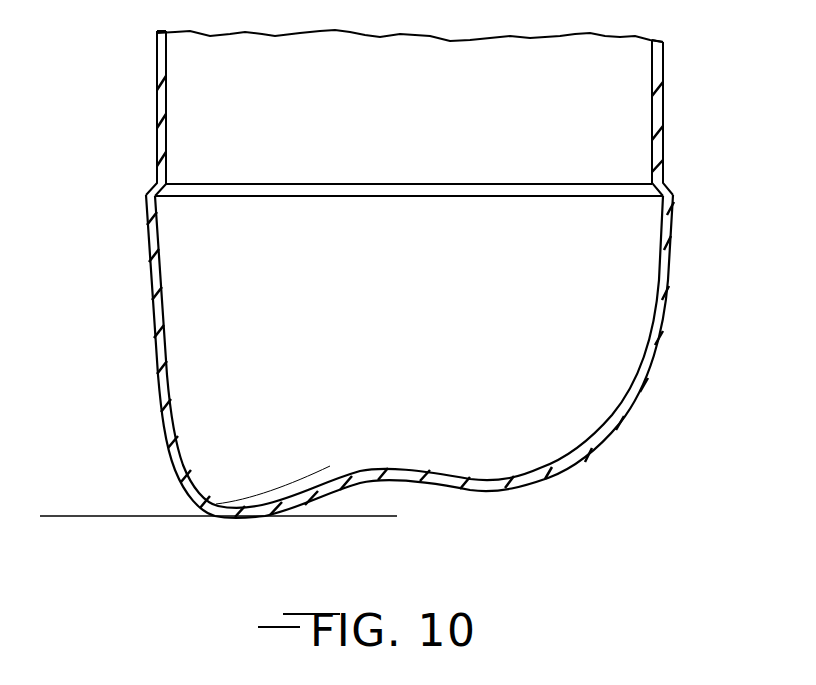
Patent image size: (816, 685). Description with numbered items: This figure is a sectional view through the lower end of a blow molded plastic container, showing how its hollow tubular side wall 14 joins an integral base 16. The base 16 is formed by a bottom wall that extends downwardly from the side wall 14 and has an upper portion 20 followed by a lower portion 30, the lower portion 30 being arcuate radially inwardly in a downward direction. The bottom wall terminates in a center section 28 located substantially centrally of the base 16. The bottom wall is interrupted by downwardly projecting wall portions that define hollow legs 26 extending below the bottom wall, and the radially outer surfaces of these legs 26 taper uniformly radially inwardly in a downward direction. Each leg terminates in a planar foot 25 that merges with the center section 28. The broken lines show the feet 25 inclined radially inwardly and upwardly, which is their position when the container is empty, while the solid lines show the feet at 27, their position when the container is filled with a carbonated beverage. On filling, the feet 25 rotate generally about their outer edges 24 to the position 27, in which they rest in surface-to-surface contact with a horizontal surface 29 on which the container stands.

The side wall 14 is at (663, 73).
The base 16 is at (668, 294).
The upper portion 20 is at (672, 229).
The outer edges 24 is at (207, 517).
The planar feet 25 is at (300, 478).
The hollow legs 26 is at (173, 478).
The filled position of feet 27 is at (250, 518).
The center section 28 is at (398, 468).
The horizontal surface 29 is at (142, 517).
The lower portion 30 is at (567, 452).